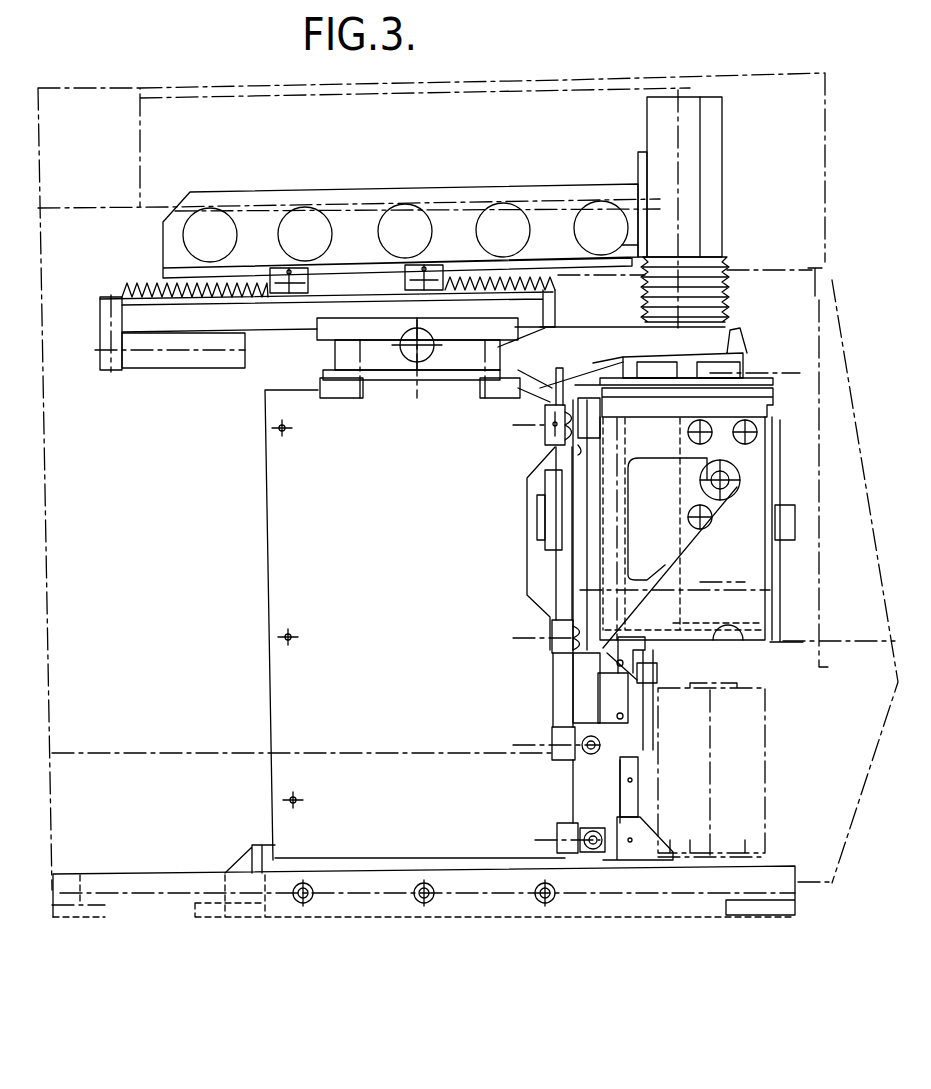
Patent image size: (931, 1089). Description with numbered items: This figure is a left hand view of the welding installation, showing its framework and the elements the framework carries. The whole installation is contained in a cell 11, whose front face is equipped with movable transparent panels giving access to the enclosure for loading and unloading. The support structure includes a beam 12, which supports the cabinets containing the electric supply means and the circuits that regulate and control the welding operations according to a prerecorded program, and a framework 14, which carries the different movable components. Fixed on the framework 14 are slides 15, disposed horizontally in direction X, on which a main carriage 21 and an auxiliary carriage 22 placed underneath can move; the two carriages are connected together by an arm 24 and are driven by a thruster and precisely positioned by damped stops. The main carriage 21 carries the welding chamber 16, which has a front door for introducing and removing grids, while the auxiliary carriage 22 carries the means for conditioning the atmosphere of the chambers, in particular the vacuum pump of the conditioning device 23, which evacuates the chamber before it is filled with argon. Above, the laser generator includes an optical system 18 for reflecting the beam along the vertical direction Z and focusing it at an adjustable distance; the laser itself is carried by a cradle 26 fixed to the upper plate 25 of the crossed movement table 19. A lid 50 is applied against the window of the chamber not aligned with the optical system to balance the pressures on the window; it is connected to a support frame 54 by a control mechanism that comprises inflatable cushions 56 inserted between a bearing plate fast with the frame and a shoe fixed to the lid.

The cell 11 is at (595, 78).
The beam 12 is at (623, 875).
The framework 14 is at (285, 480).
The slides 15 is at (545, 430).
The welding chamber 16 is at (755, 478).
The optical system 18 is at (685, 135).
The crossed movement table 19 is at (326, 356).
The main carriage 21 is at (587, 513).
The auxiliary carriage 22 is at (630, 795).
The conditioning device 23 is at (738, 763).
The arm 24 is at (645, 697).
The upper plate 25 is at (147, 323).
The cradle 26 is at (175, 243).
The lid 50 is at (738, 398).
The support frame 54 is at (700, 333).
The inflatable cushions 56 is at (727, 362).